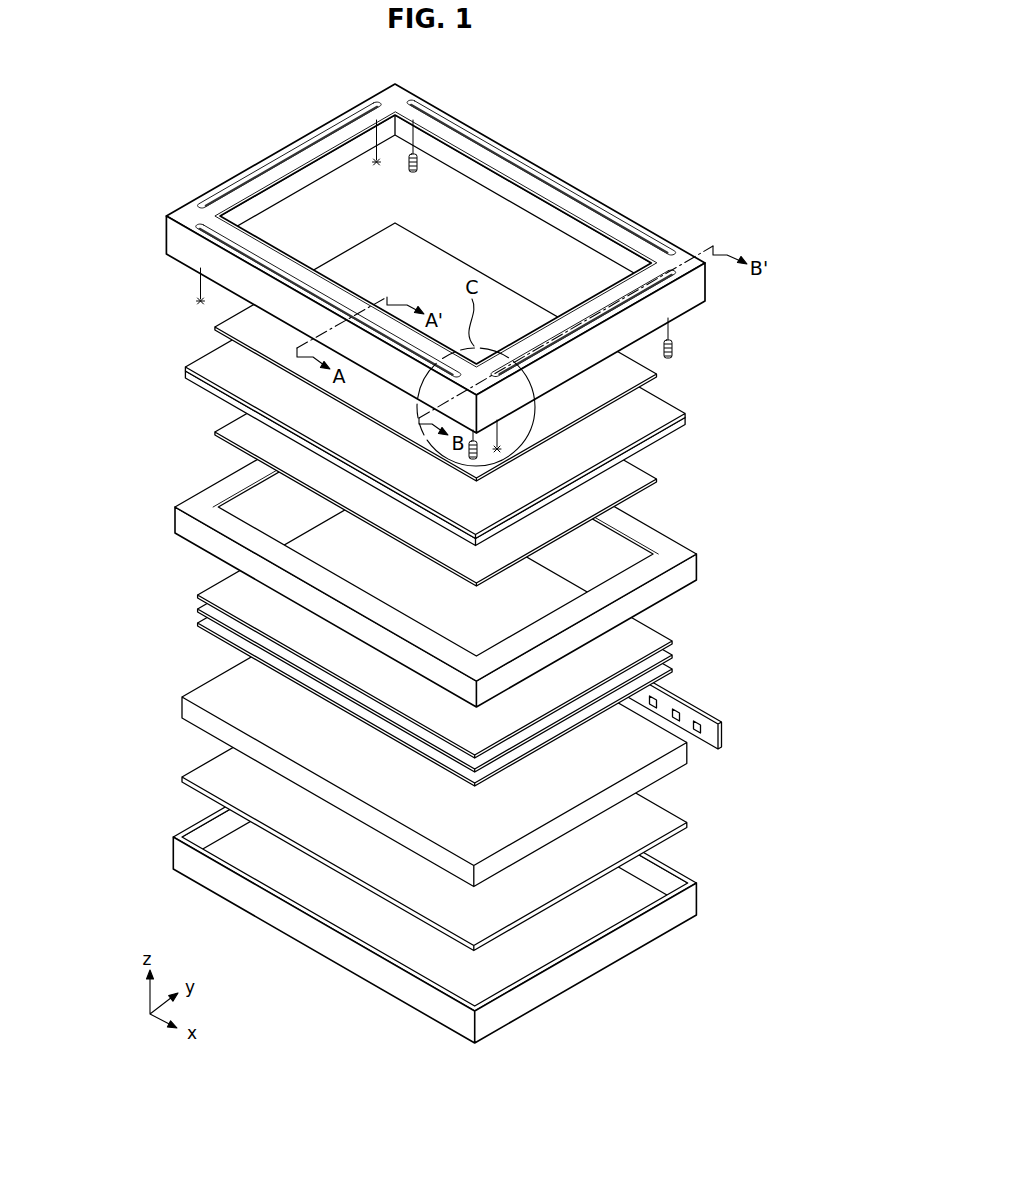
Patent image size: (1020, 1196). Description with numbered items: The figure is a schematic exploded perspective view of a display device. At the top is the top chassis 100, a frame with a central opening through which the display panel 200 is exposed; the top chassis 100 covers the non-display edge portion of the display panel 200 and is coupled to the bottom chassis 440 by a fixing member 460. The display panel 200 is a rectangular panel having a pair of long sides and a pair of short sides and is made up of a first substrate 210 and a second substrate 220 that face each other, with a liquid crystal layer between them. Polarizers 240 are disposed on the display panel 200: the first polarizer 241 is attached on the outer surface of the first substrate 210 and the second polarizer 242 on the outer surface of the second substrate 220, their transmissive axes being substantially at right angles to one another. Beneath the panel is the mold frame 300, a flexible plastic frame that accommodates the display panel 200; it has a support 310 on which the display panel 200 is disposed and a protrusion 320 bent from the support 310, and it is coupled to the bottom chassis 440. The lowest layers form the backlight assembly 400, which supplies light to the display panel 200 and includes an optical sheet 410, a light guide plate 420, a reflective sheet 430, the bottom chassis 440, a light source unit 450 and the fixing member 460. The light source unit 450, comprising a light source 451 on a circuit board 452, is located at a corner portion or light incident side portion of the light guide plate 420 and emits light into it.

The top chassis 100 is at (472, 271).
The fixing member 460 is at (603, 218).
The display panel 200 is at (500, 396).
The first substrate 210 is at (670, 435).
The second substrate 220 is at (670, 409).
The polarizers 240 is at (125, 315).
The first polarizer 241 is at (247, 428).
The second polarizer 242 is at (247, 323).
The mold frame 300 is at (378, 543).
The support 310 is at (220, 488).
The protrusion 320 is at (204, 540).
The backlight assembly 400 is at (438, 762).
The optical sheet 410 is at (384, 633).
The light guide plate 420 is at (186, 713).
The reflective sheet 430 is at (186, 784).
The bottom chassis 440 is at (183, 856).
The light source unit 450 is at (718, 705).
The light source 451 is at (694, 713).
The circuit board 452 is at (710, 738).